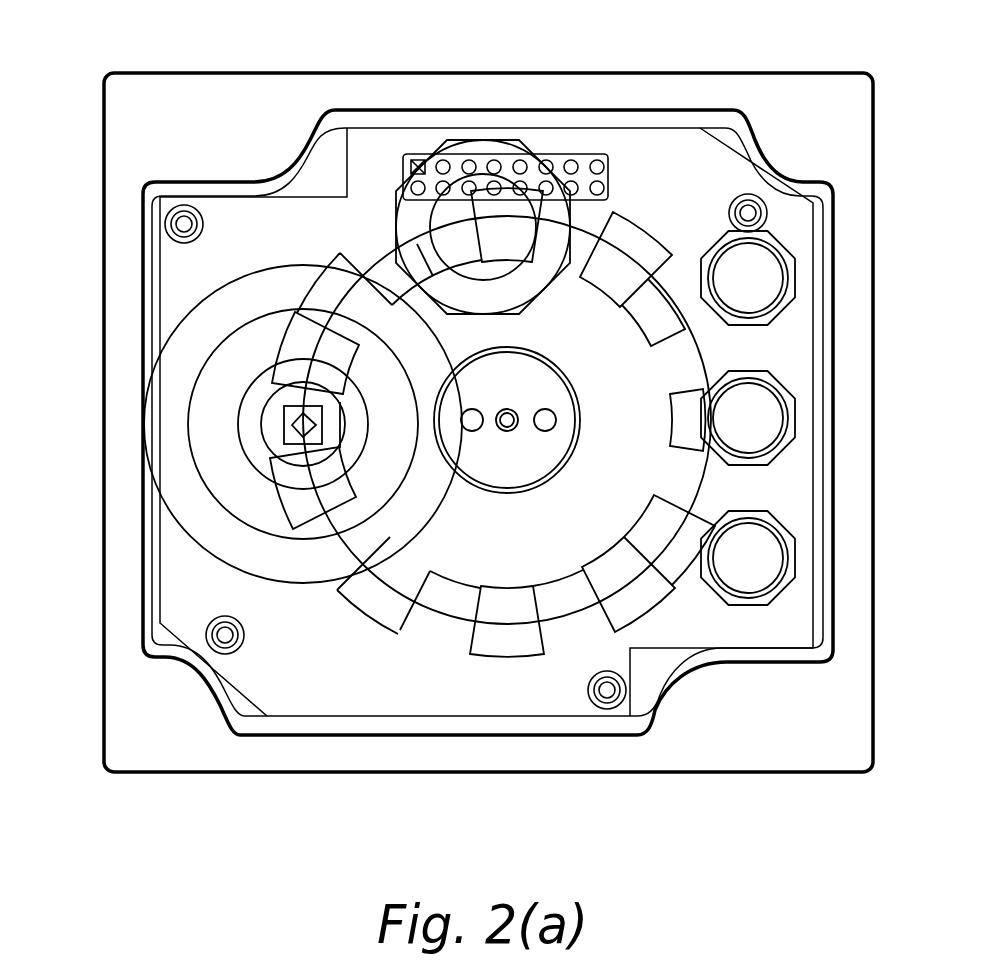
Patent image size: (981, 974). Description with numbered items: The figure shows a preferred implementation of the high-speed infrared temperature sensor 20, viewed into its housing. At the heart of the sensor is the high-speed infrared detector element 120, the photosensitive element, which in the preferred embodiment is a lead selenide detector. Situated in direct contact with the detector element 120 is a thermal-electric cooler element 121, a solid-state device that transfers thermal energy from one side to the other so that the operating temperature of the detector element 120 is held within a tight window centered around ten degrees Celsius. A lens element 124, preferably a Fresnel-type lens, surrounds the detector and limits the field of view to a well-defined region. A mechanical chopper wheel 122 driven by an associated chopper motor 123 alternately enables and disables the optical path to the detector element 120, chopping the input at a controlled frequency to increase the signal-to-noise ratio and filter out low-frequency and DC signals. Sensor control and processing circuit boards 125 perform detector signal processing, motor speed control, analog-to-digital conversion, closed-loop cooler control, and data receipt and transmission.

The high-speed infrared temperature sensor 20 is at (873, 420).
The high-speed infrared detector element 120 is at (284, 426).
The thermal-electric (TE) cooler element 121 is at (268, 437).
The chopper wheel 122 is at (375, 610).
The chopper motor 123 is at (527, 491).
The lens element 124 is at (200, 298).
The sensor control and processing circuit boards 125 is at (608, 176).